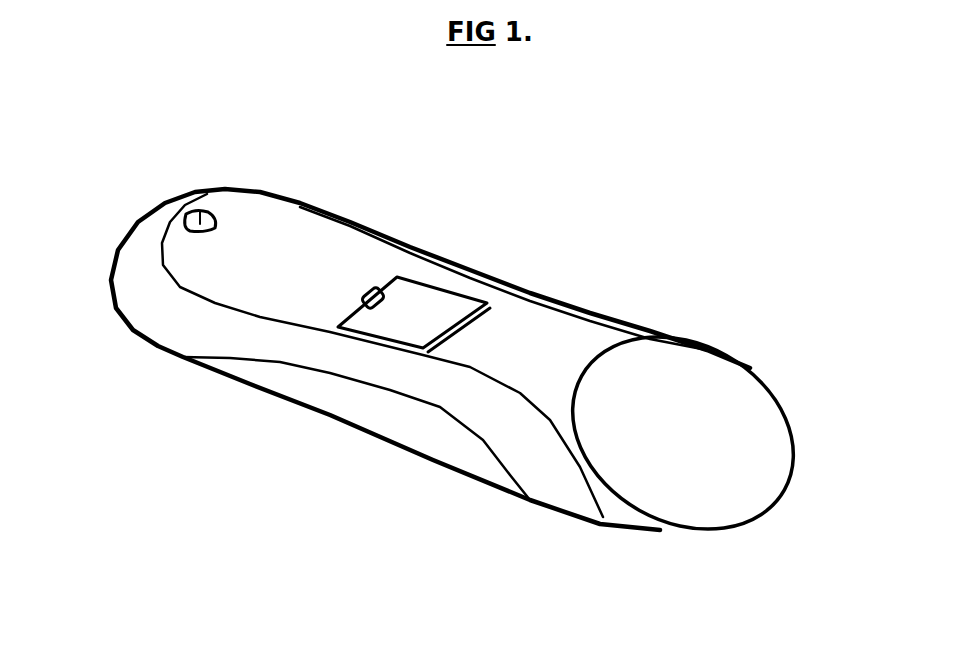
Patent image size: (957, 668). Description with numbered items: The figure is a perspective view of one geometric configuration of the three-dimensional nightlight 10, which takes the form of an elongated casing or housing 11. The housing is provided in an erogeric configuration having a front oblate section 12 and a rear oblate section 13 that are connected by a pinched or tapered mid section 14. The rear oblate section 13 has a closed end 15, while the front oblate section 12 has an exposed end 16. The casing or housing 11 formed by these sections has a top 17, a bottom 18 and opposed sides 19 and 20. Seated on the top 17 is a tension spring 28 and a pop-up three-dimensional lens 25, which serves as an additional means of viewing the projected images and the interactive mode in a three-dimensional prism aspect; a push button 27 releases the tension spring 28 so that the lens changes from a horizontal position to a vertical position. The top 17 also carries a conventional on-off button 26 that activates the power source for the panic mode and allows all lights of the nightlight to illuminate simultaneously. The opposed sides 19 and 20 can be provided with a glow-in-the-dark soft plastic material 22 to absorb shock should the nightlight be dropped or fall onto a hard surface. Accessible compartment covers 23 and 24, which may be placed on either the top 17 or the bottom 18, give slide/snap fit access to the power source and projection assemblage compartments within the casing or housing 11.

The 3-D Nightlight 10 is at (652, 208).
The casing or housing 11 is at (433, 460).
The front oblate section 12 is at (752, 368).
The rear oblate section 13 is at (297, 240).
The pinched or tapered mid section 14 is at (632, 318).
The closed end 15 is at (140, 247).
The exposed end 16 is at (750, 498).
The top 17 is at (543, 327).
The bottom 18 is at (287, 393).
The side 19 is at (703, 348).
The side 20 is at (387, 410).
The glow-in-the-dark soft plastic material 22 is at (567, 497).
The accessible compartment cover 23 is at (183, 357).
The accessible compartment cover 24 is at (510, 497).
The 3-D lens 25 is at (414, 312).
The on-off button 26 is at (203, 197).
The push button 27 is at (373, 288).
The tension spring 28 is at (517, 292).